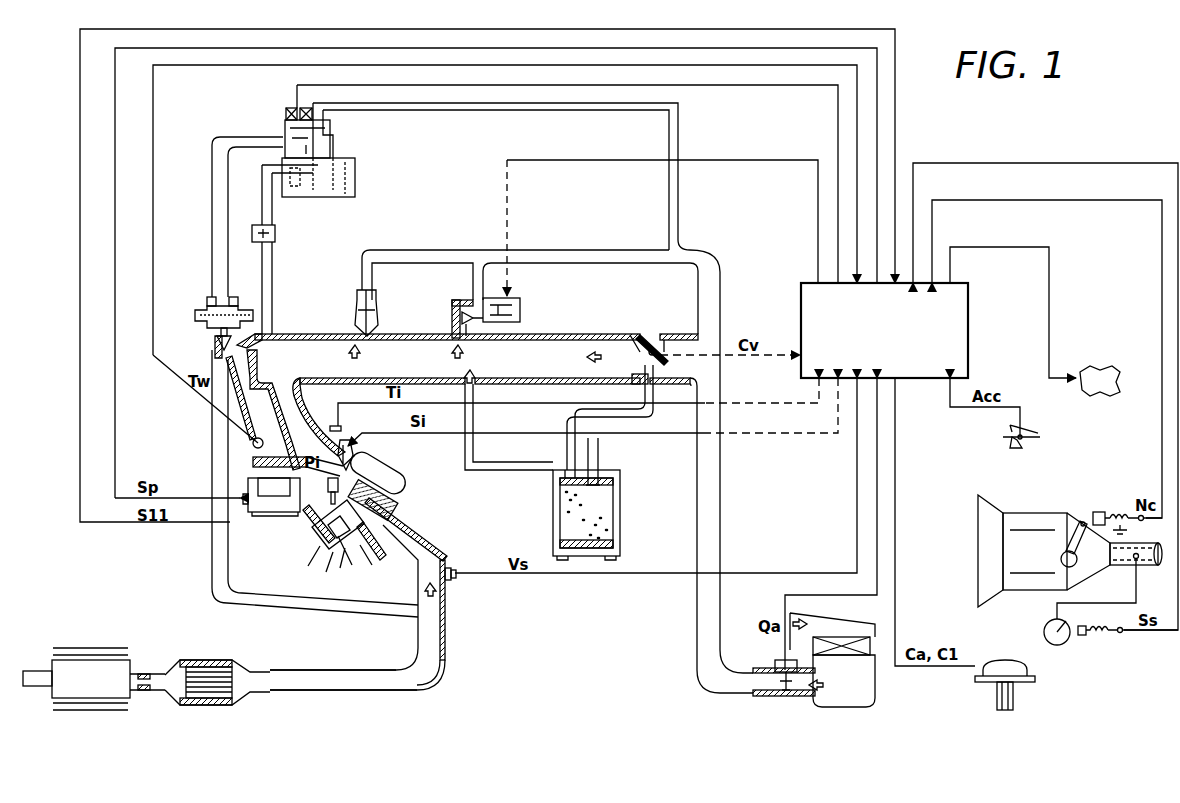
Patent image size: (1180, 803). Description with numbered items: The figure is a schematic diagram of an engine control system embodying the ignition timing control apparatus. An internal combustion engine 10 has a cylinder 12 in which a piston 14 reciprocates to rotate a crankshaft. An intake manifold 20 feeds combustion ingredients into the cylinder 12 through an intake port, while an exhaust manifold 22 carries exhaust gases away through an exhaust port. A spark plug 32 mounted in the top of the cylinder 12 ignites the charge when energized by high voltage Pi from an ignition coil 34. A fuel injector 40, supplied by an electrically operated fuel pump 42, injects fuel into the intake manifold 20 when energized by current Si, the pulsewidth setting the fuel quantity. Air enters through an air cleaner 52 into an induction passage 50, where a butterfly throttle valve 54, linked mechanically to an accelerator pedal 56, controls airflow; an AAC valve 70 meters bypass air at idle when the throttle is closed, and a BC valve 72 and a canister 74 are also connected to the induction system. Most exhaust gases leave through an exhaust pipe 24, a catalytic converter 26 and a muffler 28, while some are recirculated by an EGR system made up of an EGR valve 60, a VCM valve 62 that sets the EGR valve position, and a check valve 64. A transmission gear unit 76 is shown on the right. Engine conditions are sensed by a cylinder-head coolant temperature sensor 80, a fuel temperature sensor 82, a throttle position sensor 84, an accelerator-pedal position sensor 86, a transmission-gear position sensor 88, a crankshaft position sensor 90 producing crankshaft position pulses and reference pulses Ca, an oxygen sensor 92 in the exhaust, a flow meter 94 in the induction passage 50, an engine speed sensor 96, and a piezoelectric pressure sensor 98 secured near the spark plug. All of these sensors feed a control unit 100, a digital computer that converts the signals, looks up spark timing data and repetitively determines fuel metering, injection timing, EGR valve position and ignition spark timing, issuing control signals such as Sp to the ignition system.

The internal combustion engine 10 is at (328, 521).
The cylinder 12 is at (372, 548).
The piston 14 is at (334, 545).
The intake manifold 20 is at (290, 403).
The exhaust manifold 22 is at (412, 537).
The exhaust pipe 24 is at (445, 645).
The catalytic converter 26 is at (216, 708).
The muffler 28 is at (110, 700).
The spark plug 32 is at (327, 494).
The ignition coil 34 is at (248, 482).
The fuel injector 40 is at (360, 434).
The fuel pump 42 is at (1104, 370).
The induction passage 50 is at (412, 337).
The air cleaner 52 is at (855, 657).
The butterfly throttle valve 54 is at (636, 368).
The accelerator pedal 56 is at (1032, 430).
The EGR valve 60 is at (214, 302).
The VCM valve 62 is at (348, 142).
The check valve 64 is at (276, 233).
The AAC valve 70 is at (528, 310).
The BC valve 72 is at (357, 298).
The canister 74 is at (622, 528).
The transmission gear unit 76 is at (1035, 522).
The cylinder-head coolant temperature sensor 80 is at (253, 443).
The fuel temperature sensor 82 is at (333, 426).
The throttle position sensor 84 is at (660, 345).
The accelerator-pedal position sensor 86 is at (1015, 447).
The transmission-gear position sensor 88 is at (1097, 520).
The crankshaft position sensor 90 is at (1022, 683).
The oxygen sensor 92 is at (450, 568).
The flow meter 94 is at (776, 666).
The engine speed sensor 96 is at (1084, 637).
The pressure sensor 98 is at (395, 482).
The control unit 100 is at (801, 294).